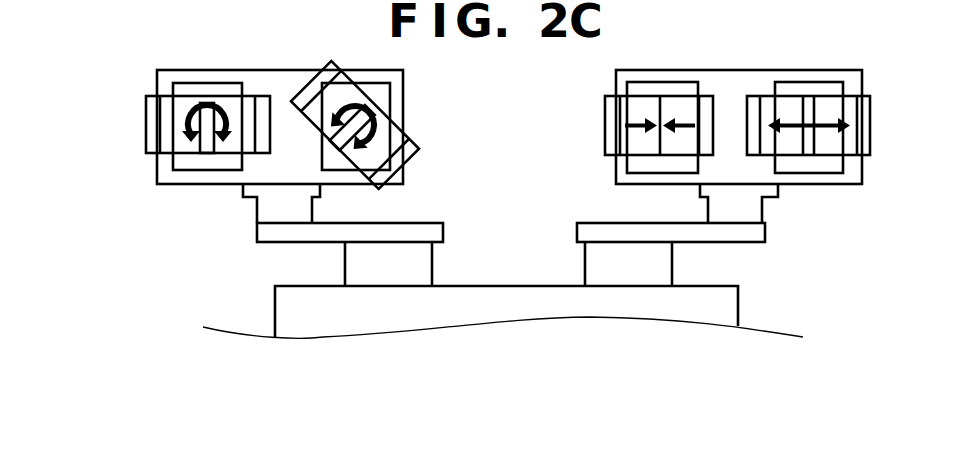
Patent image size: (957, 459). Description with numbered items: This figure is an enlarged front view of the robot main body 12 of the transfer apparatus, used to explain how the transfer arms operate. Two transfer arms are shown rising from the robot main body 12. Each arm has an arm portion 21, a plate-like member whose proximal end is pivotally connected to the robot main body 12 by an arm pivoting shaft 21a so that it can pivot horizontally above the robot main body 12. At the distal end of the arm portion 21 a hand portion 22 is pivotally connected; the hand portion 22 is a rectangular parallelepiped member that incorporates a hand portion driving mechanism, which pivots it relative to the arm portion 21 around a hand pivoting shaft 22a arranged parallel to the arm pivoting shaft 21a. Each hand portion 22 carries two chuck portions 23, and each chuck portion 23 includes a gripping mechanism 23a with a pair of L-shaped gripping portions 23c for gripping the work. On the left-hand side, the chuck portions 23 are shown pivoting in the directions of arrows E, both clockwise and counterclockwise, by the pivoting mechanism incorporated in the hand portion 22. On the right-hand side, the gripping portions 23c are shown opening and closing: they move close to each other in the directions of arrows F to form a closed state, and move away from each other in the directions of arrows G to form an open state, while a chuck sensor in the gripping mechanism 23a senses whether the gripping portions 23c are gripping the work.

The robot main body 12 is at (453, 297).
The arm portion 21 is at (263, 229).
The arm pivoting shaft 21a is at (363, 264).
The hand portion 22 is at (157, 162).
The hand pivoting shaft 22a is at (273, 212).
The chuck portion 23 is at (116, 150).
The gripping mechanism 23a is at (183, 166).
The gripping portion 23c is at (400, 114).
The arrows E is at (182, 122).
The arrows F is at (660, 134).
The arrows G is at (813, 135).